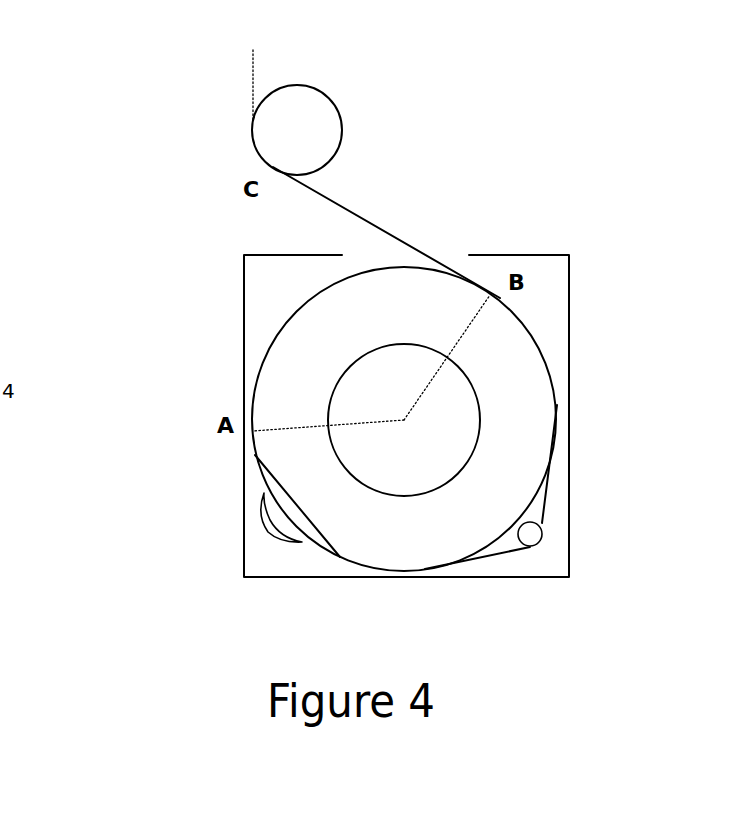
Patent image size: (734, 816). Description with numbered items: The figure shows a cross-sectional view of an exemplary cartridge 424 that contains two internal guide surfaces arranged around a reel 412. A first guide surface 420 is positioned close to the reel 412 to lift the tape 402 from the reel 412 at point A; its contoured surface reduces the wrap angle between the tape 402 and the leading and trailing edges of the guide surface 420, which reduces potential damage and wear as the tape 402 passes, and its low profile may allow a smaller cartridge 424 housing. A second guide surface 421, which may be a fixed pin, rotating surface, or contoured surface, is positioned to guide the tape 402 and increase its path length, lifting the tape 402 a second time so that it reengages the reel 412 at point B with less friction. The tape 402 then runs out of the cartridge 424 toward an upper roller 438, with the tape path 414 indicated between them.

The tape 402 is at (255, 482).
The reel 412 is at (470, 458).
The tape 414 is at (436, 224).
The first guide surface 420 is at (272, 535).
The second guide surface 421 is at (530, 534).
The cartridge 424 is at (569, 384).
The guide roller 438 is at (316, 138).